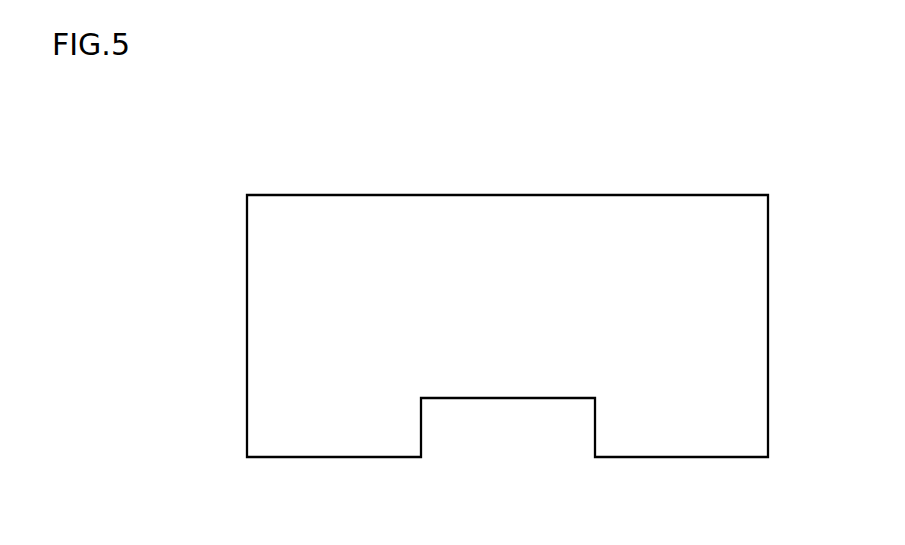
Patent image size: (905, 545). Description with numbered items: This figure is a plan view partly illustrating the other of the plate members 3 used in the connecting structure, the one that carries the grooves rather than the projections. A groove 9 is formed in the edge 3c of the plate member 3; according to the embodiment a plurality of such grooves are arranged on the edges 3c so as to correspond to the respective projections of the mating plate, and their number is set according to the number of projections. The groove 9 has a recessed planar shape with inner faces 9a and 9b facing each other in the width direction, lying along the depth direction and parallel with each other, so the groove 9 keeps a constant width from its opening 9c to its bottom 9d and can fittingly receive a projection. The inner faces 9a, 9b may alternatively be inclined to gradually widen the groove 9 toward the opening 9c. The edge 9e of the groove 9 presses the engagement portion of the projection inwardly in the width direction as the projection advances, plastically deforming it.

The plate member 3 is at (378, 195).
The edge of plate member 3c is at (340, 457).
The groove 9 is at (493, 430).
The inner face of groove 9a is at (421, 428).
The inner face of groove 9b is at (595, 436).
The opening of groove 9c is at (463, 457).
The bottom of groove 9d is at (535, 398).
The edge of groove 9e is at (596, 402).